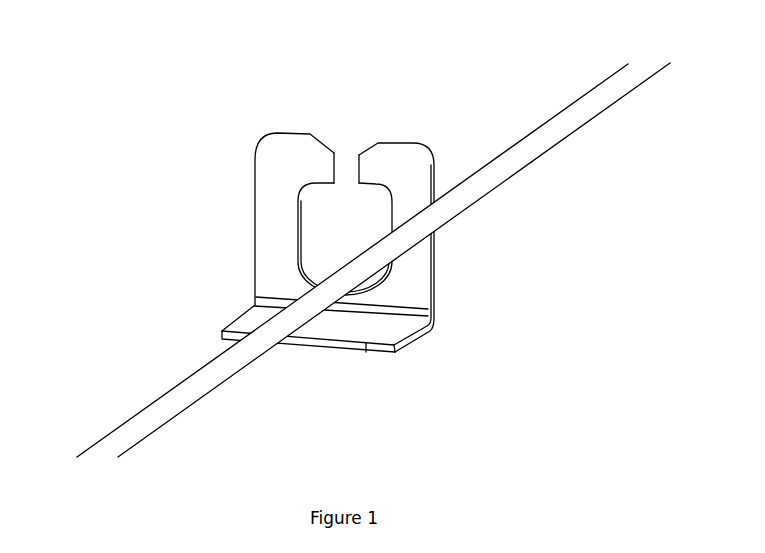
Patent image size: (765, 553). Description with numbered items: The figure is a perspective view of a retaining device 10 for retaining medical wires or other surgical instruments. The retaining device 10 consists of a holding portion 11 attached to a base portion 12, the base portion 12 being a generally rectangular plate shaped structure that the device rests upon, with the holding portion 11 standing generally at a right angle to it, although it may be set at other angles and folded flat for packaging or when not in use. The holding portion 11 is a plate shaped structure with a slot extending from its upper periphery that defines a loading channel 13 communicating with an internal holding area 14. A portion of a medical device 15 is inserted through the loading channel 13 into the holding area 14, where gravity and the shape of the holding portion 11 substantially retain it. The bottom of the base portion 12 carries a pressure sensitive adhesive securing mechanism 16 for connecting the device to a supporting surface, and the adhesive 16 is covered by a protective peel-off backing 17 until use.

The retaining device 10 is at (302, 199).
The holding portion 11 is at (407, 168).
The base portion 12 is at (243, 322).
The loading channel 13 is at (343, 158).
The holding area 14 is at (338, 228).
The medical device 15 is at (527, 165).
The adhesive securing mechanism 16 is at (347, 352).
The peel-off backing 17 is at (207, 335).